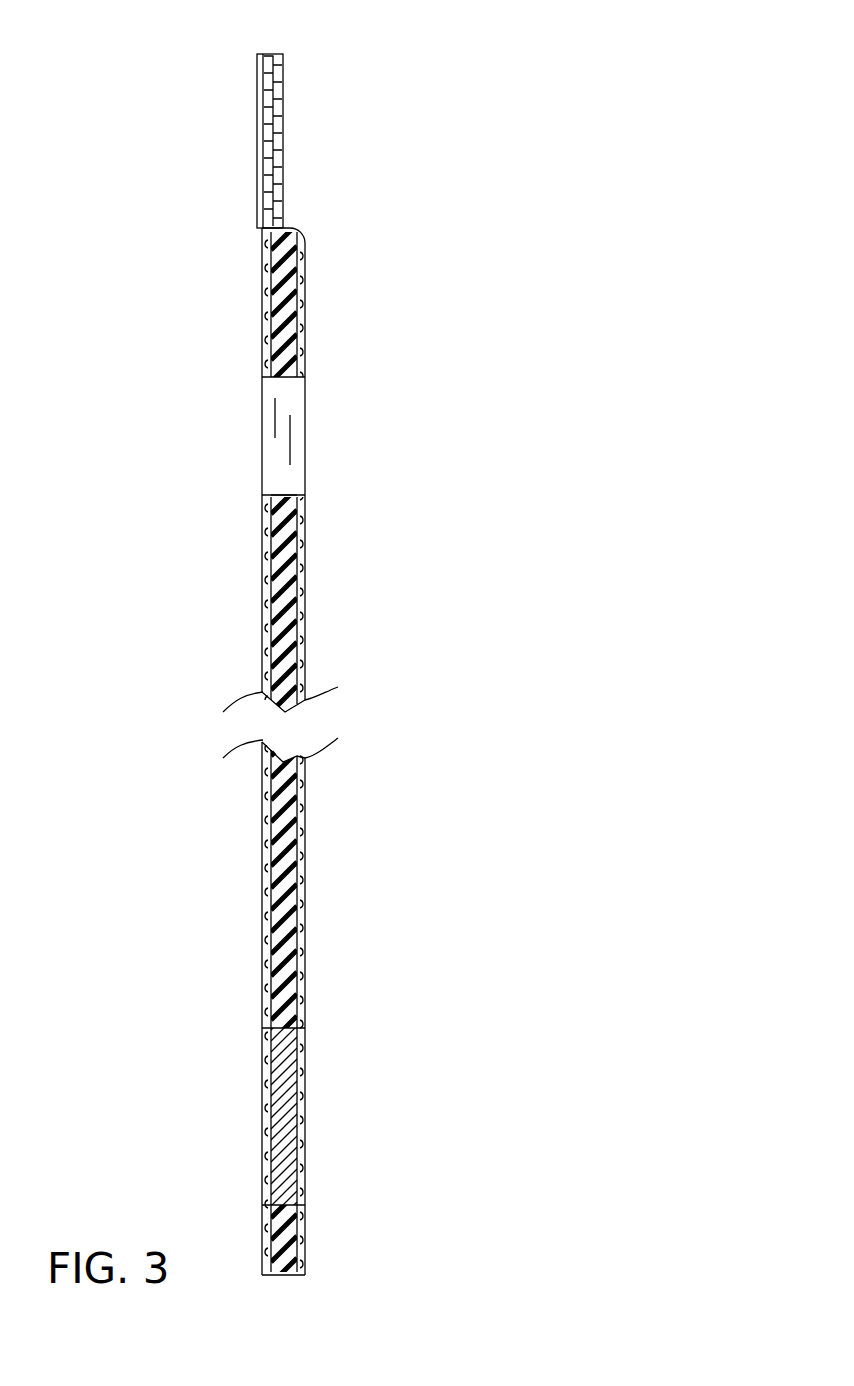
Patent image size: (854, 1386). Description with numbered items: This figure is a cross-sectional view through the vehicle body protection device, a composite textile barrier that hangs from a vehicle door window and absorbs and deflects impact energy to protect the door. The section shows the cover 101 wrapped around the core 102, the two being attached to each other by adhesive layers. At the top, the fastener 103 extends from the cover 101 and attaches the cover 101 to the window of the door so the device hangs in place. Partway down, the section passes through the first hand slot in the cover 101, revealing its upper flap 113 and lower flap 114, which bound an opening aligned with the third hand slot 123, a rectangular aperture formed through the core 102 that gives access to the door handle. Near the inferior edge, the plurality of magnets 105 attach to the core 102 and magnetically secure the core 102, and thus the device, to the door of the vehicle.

The cover 101 is at (305, 627).
The core 102 is at (305, 308).
The fastener 103 is at (283, 152).
The plurality of magnets 105 is at (282, 1137).
The upper flap 113 is at (276, 378).
The lower flap 114 is at (285, 495).
The third hand slot 123 is at (282, 432).